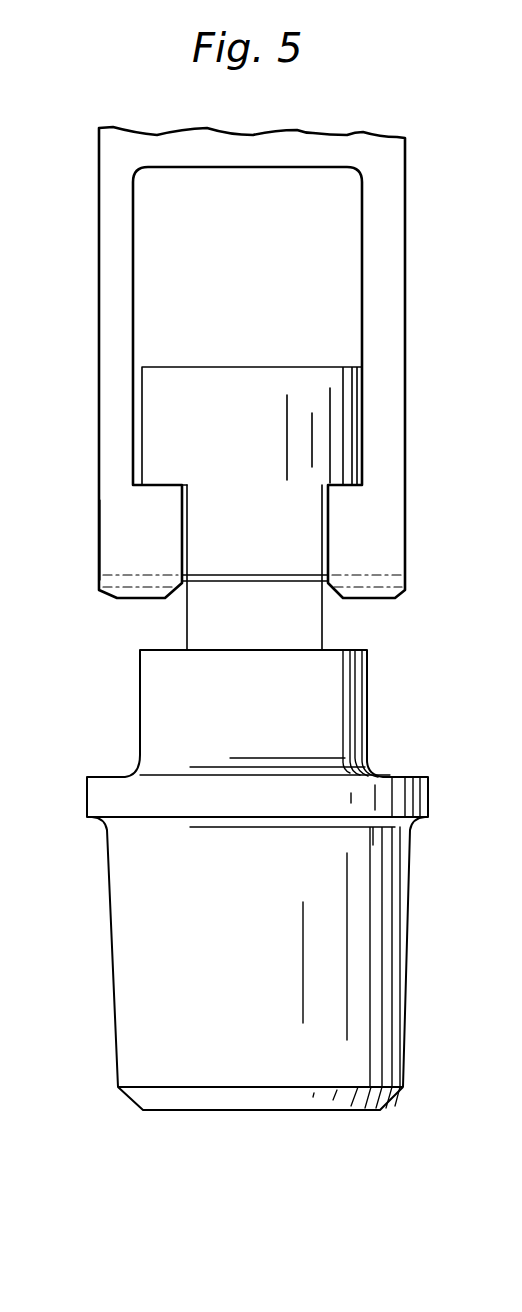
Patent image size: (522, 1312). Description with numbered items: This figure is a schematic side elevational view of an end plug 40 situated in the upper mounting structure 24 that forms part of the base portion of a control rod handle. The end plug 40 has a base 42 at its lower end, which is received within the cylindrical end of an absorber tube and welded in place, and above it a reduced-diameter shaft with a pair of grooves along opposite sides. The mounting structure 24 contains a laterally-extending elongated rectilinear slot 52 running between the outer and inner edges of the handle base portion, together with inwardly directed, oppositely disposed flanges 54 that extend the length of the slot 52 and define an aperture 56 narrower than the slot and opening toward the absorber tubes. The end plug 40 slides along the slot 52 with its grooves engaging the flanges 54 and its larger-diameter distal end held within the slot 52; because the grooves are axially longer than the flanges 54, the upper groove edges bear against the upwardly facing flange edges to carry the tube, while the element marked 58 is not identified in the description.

The upper mounting structure 24 is at (120, 312).
The laterally-extending elongated rectilinear slot 52 is at (133, 207).
The inwardly directed oppositely disposed flanges 54 is at (123, 510).
The aperture 56 is at (310, 509).
The ring 58 is at (252, 585).
The end plug 40 is at (140, 732).
The base 42 is at (132, 1063).